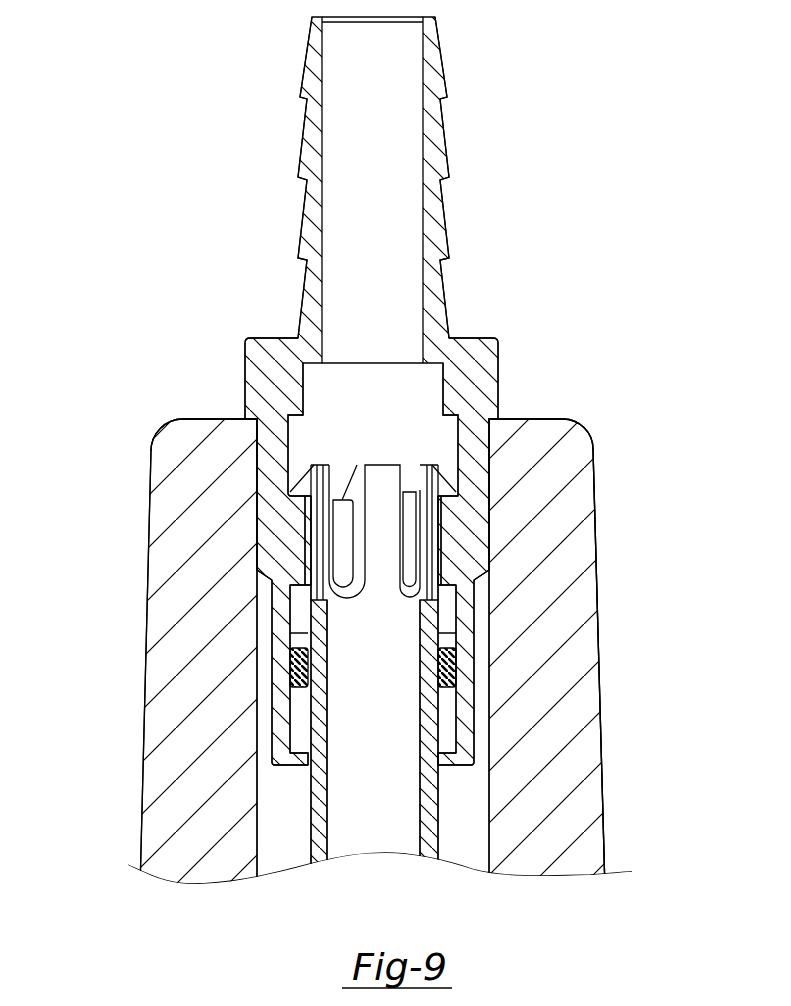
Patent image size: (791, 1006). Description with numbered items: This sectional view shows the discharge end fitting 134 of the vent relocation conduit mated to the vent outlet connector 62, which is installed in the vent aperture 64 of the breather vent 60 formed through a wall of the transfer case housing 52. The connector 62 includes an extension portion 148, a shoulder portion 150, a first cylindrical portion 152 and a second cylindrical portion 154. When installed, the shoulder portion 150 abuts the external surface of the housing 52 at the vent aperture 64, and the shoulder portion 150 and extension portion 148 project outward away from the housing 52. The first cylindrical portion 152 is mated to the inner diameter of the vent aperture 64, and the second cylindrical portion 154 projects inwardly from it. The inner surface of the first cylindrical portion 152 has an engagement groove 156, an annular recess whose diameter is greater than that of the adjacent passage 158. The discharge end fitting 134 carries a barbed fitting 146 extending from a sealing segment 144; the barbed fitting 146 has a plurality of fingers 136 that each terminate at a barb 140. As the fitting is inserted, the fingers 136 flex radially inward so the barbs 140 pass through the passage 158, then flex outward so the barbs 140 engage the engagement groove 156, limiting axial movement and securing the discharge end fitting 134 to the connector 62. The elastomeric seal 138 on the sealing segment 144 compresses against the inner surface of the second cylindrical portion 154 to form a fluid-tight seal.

The housing 52 is at (172, 657).
The breather vent 60 is at (612, 768).
The vent outlet connector 62 is at (290, 391).
The vent aperture 64 is at (492, 446).
The discharge end fitting 134 is at (448, 610).
The fingers 136 is at (298, 550).
The seal 138 is at (457, 677).
The barbs 140 is at (312, 493).
The sealing segment 144 is at (448, 740).
The barbed fitting 146 is at (433, 627).
The extension portion 148 is at (440, 160).
The shoulder portion 150 is at (475, 338).
The first cylindrical portion 152 is at (265, 442).
The second cylindrical portion 154 is at (280, 703).
The engagement groove 156 is at (287, 458).
The passage 158 is at (300, 507).